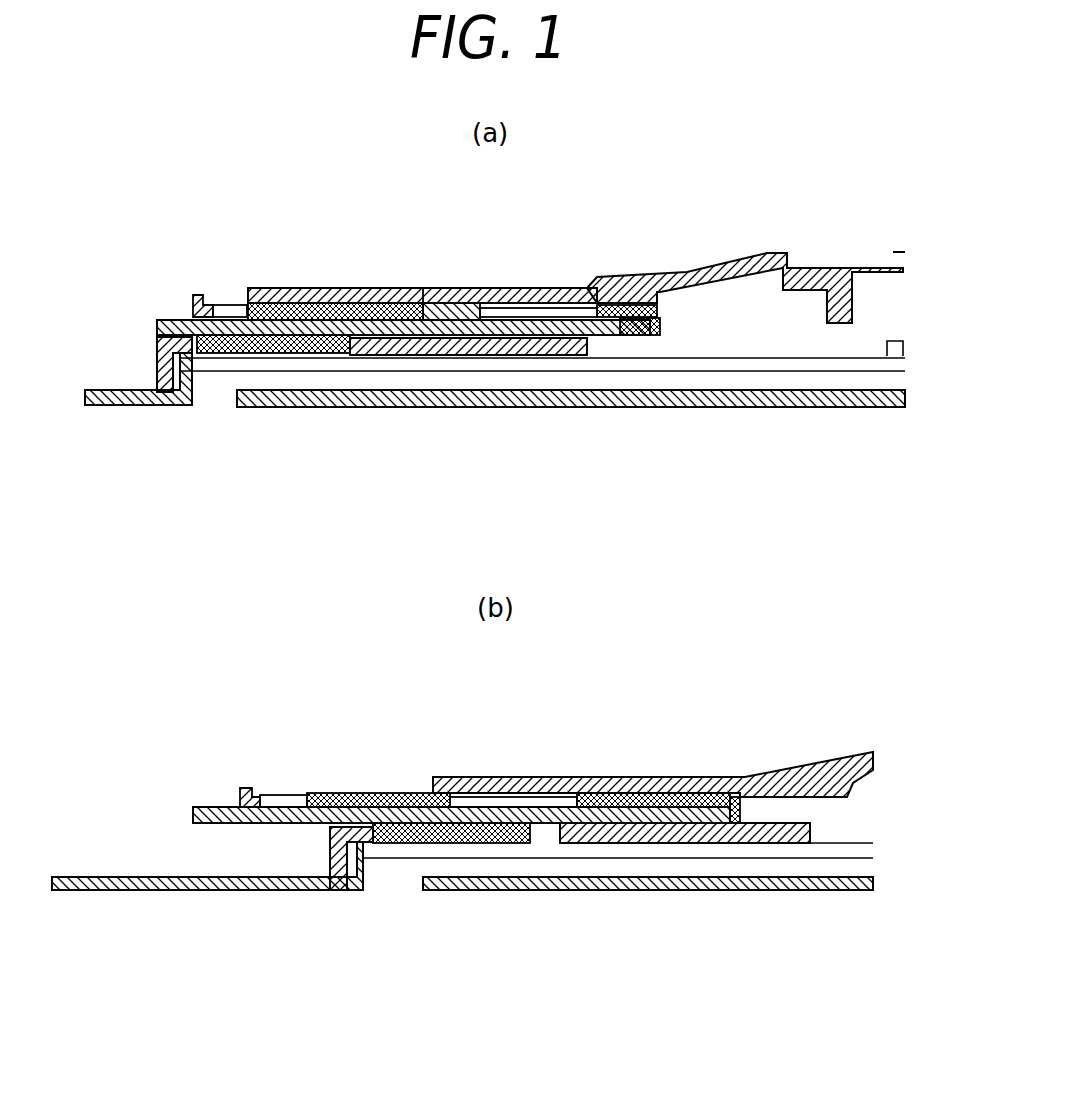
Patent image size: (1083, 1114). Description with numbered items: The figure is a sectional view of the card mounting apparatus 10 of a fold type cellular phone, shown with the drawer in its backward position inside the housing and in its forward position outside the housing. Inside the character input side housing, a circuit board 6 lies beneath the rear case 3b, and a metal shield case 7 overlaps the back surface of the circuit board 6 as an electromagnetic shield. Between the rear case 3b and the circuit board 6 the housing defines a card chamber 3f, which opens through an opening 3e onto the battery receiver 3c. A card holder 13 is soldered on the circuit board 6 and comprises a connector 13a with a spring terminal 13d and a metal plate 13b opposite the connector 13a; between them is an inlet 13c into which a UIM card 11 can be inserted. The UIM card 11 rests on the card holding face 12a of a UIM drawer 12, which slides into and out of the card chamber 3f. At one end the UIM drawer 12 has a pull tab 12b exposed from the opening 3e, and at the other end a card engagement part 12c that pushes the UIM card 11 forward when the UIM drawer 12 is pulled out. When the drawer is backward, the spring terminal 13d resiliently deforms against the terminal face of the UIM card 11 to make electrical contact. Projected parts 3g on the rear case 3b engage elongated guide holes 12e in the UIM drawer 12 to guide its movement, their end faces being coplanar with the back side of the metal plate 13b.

The rear case 3b is at (720, 262).
The battery receiver 3c is at (114, 384).
The opening 3e is at (232, 290).
The card chamber 3f is at (615, 348).
The projected parts 3g is at (373, 332).
The circuit board 6 is at (760, 372).
The metal shield case 7 is at (124, 406).
The card mounting apparatus 10 is at (210, 262).
The UIM card 11 is at (160, 320).
The UIM drawer 12 is at (287, 312).
The card holding face 12a is at (300, 342).
The pull tab 12b is at (197, 293).
The card engagement part 12c is at (663, 348).
The elongated guide holes 12e is at (547, 310).
The card holder 13 is at (453, 358).
The connector 13a is at (523, 358).
The metal plate 13b is at (500, 313).
The inlet 13c is at (447, 310).
The spring terminal 13d is at (423, 300).